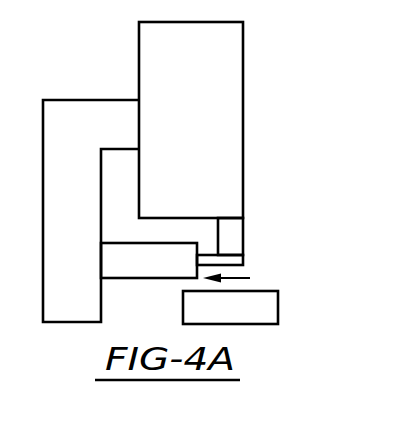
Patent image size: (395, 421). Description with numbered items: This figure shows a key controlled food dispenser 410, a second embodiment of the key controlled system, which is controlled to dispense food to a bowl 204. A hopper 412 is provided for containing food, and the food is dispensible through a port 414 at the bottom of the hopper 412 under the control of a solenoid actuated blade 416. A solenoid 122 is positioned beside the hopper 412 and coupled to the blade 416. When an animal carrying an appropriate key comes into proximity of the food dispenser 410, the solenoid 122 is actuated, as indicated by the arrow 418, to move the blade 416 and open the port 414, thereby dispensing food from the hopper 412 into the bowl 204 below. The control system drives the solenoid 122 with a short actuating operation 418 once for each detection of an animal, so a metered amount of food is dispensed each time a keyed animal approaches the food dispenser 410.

The food dispenser 410 is at (375, 269).
The hopper 412 is at (243, 181).
The port 414 is at (243, 238).
The solenoid actuated blade 416 is at (243, 260).
The arrow 418 is at (245, 278).
The solenoid 122 is at (155, 282).
The bowl 204 is at (277, 298).